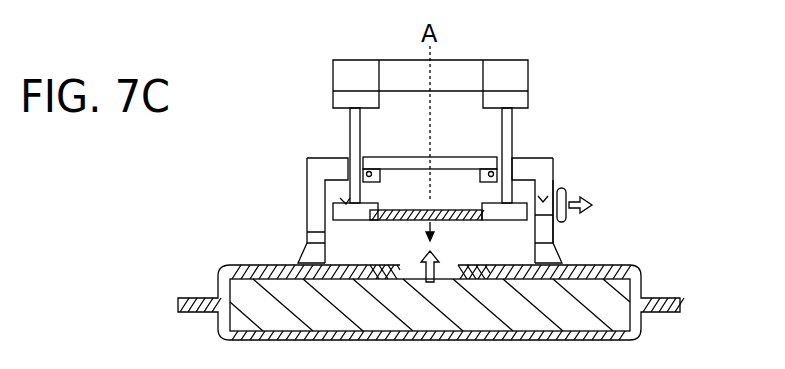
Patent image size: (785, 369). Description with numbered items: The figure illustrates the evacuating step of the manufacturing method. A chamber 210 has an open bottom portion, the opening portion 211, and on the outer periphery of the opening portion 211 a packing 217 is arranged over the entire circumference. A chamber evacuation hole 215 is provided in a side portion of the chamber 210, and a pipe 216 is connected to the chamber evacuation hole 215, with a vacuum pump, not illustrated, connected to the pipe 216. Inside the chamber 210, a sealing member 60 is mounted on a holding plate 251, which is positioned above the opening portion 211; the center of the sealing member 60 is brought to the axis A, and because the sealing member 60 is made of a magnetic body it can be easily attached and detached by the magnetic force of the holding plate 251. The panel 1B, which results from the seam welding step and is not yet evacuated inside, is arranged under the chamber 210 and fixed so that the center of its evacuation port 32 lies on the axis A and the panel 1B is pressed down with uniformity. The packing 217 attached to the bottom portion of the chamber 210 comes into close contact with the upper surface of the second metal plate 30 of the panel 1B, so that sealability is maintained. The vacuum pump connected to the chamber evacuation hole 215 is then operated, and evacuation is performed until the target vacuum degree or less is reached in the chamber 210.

The panel 1B is at (692, 266).
The second metal plate 30 is at (215, 269).
The evacuation port 32 is at (452, 265).
The sealing member 60 is at (400, 222).
The chamber 210 is at (307, 190).
The opening portion 211 is at (312, 236).
The chamber evacuation hole 215 is at (553, 182).
The pipe 216 is at (566, 188).
The packing 217 is at (557, 260).
The holding plate 251 is at (346, 203).